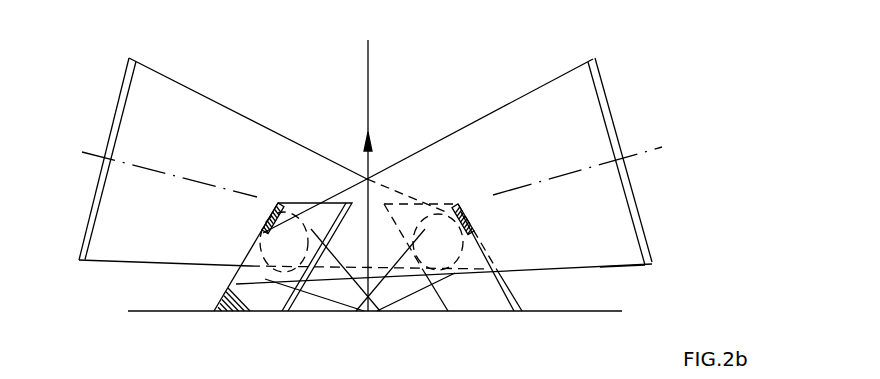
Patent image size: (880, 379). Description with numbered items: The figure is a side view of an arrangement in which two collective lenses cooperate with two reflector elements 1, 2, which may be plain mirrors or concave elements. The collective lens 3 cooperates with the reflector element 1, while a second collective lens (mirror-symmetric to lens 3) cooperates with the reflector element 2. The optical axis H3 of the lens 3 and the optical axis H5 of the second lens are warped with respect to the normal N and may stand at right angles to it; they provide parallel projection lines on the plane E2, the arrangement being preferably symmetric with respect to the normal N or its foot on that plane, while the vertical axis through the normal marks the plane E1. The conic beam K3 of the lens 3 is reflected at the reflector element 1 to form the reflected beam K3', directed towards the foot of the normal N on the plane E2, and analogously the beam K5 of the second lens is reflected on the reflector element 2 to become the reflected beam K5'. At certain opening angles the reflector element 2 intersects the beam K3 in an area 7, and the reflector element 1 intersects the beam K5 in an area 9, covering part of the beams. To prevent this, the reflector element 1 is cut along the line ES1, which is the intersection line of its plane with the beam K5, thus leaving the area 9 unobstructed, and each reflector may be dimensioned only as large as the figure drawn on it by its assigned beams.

The reflector element 1 is at (260, 300).
The reflector element 2 is at (478, 300).
The collective lens 3 is at (587, 98).
The area 7 is at (446, 206).
The area 9 is at (278, 203).
The plane E1 is at (381, 174).
The plane E2 is at (560, 313).
The normal N is at (378, 144).
The optical axis H3 is at (577, 171).
The optical axis H5 is at (169, 174).
The conic beam K3 is at (624, 282).
The beam K5 is at (164, 184).
The reflected beam K3' is at (314, 320).
The reflected beam K5' is at (416, 317).
The intersection line ES1 is at (223, 312).